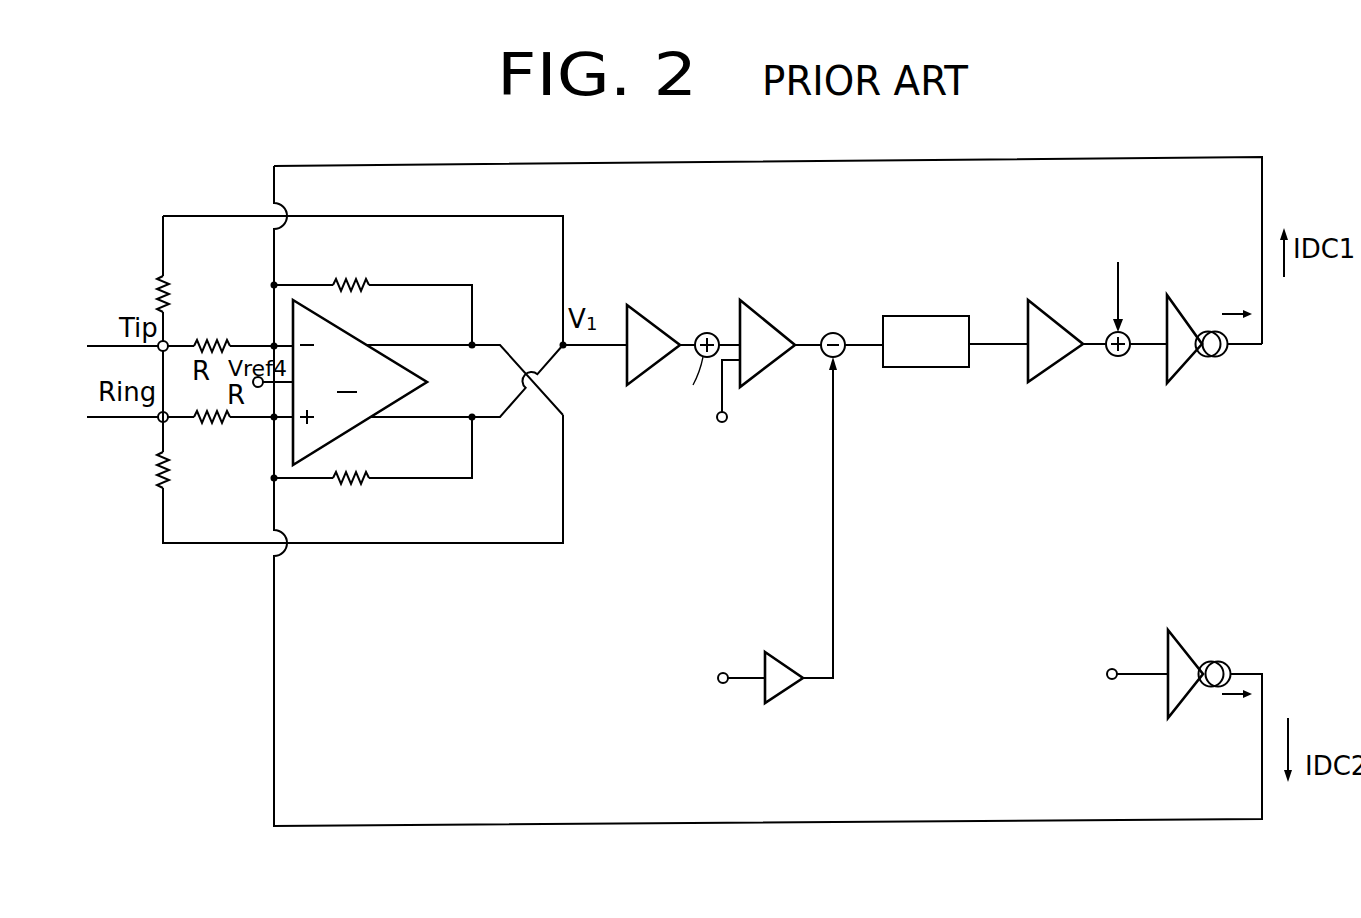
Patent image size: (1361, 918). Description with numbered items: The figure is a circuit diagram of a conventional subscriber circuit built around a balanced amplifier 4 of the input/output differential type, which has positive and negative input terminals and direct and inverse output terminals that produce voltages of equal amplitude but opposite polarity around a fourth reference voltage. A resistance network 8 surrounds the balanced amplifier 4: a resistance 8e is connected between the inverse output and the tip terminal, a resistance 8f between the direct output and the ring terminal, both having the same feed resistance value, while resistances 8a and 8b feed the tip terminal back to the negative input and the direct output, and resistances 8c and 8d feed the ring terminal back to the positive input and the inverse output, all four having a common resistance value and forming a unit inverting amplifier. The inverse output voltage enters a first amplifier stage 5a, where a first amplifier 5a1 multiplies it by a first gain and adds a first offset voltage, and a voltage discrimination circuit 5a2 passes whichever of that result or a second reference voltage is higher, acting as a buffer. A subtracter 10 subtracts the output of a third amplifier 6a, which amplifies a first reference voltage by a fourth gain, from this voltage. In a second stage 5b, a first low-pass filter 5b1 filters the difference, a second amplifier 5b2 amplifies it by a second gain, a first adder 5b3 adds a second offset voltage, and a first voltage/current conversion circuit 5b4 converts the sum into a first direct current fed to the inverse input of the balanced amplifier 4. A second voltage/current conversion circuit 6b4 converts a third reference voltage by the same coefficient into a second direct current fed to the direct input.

The resistance network 8 is at (328, 431).
The resistance 8a is at (213, 342).
The resistance 8b is at (357, 280).
The resistance 8c is at (210, 424).
The resistance 8d is at (362, 487).
The resistance 8e is at (165, 278).
The resistance 8f is at (158, 472).
The balanced amplifier 4 is at (363, 337).
The first amplifier stage 5a is at (707, 331).
The first amplifier 5a1 is at (645, 303).
The voltage discrimination circuit 5a2 is at (770, 315).
The subtracter 10 is at (833, 333).
The second stage 5b is at (1067, 324).
The first low-pass filter 5b1 is at (930, 368).
The second amplifier 5b2 is at (1055, 365).
The first adder 5b3 is at (1118, 357).
The first voltage/current conversion circuit 5b4 is at (1195, 358).
The third amplifier 6a is at (785, 700).
The second voltage/current conversion circuit 6b4 is at (1192, 700).